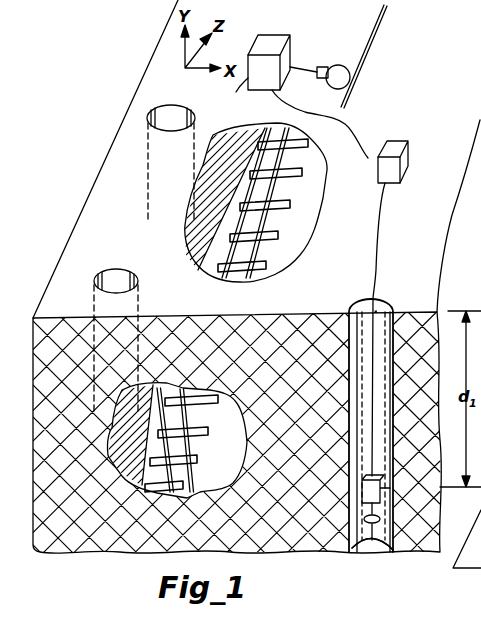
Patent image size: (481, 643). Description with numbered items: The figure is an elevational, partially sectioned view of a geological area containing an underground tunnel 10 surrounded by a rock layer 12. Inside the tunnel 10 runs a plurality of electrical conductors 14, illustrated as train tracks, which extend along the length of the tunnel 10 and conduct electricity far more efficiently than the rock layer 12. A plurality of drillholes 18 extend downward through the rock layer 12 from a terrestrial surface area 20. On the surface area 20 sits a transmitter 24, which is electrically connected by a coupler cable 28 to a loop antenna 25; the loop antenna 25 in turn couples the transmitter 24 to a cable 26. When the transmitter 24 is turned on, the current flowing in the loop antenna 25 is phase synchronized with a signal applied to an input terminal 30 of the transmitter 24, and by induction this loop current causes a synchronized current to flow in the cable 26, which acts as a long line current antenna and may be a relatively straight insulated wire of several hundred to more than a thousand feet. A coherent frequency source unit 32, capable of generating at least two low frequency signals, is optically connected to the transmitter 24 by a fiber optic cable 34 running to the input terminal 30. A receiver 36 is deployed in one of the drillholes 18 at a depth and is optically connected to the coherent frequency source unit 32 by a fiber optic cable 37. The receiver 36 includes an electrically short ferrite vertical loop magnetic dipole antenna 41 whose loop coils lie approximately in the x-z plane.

The underground tunnel 10 is at (290, 232).
The rock layer 12 is at (188, 232).
The electrical conductors 14 is at (263, 129).
The drillholes 18 is at (172, 110).
The terrestrial surface area 20 is at (112, 157).
The transmitter 24 is at (276, 35).
The loop antenna 25 is at (341, 65).
The cable 26 is at (374, 56).
The coupler cable 28 is at (313, 63).
The input terminal 30 is at (230, 93).
The coherent frequency source unit 32 is at (411, 148).
The fiber optic cable 34 is at (351, 137).
The receiver 36 is at (356, 492).
The fiber optic cable 37 is at (378, 232).
The ferrite vertical loop magnetic dipole antenna 41 is at (372, 554).